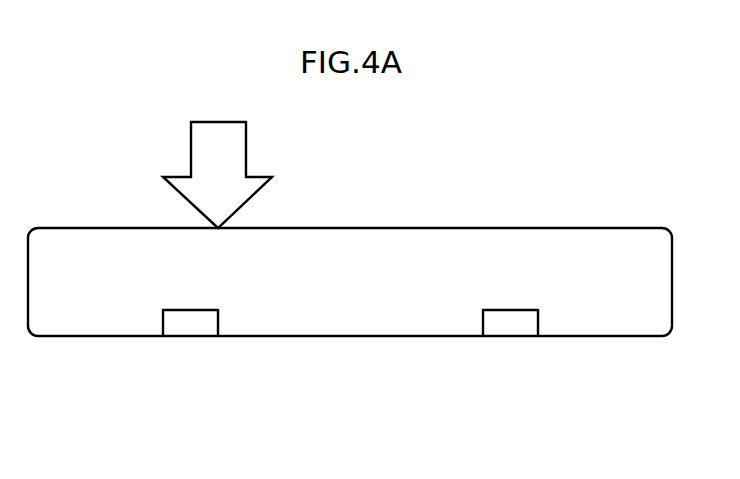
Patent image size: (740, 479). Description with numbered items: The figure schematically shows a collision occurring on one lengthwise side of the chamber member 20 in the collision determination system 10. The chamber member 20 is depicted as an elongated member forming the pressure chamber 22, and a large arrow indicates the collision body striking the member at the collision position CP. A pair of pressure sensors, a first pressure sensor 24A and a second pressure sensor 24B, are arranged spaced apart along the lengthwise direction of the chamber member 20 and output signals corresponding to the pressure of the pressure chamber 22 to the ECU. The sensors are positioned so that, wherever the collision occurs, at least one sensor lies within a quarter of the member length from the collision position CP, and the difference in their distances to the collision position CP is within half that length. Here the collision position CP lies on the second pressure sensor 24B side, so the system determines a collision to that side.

The collision determination system 10 is at (478, 168).
The chamber member 20 is at (368, 337).
The pressure chamber 22 is at (432, 322).
The first pressure sensor 24A is at (512, 325).
The second pressure sensor 24B is at (193, 323).
The collision position CP is at (218, 229).